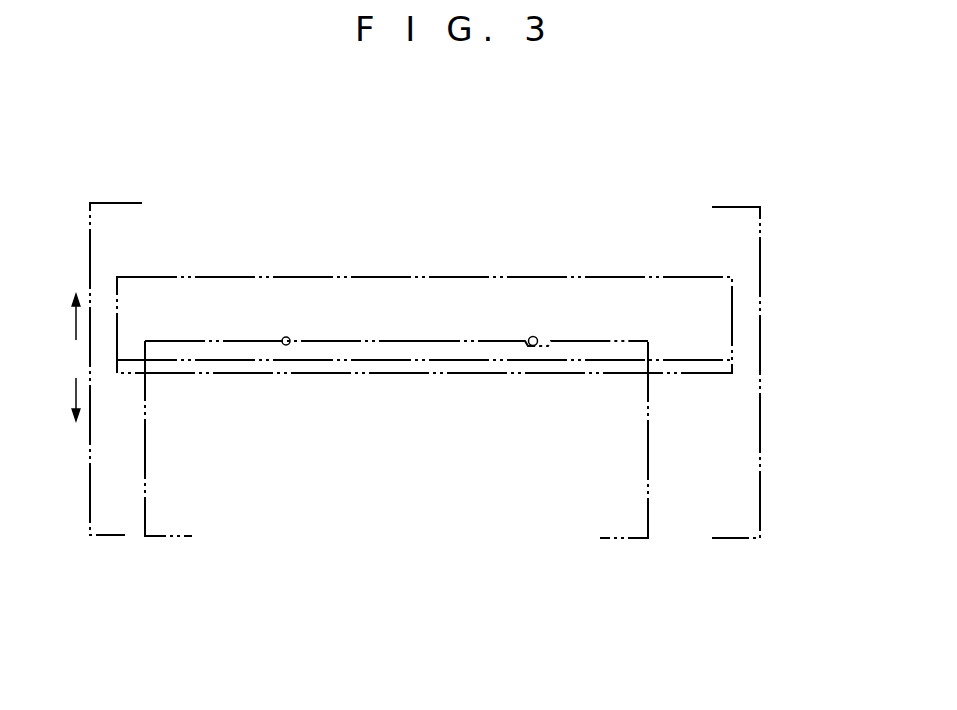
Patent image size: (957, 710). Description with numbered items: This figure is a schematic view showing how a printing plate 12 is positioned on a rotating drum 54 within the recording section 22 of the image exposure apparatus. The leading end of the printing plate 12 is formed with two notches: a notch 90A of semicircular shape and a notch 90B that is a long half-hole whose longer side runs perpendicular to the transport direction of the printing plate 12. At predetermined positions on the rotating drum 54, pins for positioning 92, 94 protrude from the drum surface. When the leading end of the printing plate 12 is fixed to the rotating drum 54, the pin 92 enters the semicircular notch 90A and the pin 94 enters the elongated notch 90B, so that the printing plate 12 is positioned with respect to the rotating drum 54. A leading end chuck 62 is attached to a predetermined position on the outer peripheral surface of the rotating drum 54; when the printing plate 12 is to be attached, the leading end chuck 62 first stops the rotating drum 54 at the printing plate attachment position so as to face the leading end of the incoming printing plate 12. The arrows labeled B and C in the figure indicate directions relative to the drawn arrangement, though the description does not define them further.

The recording section 22 is at (743, 188).
The leading end chuck 62 is at (716, 306).
The rotating drum 54 is at (745, 345).
The printing plate 12 is at (635, 493).
The notch 90A is at (289, 345).
The notch 90B is at (553, 338).
The pin for positioning 92 is at (290, 337).
The pin for positioning 94 is at (529, 337).
The direction B is at (75, 323).
The direction C is at (74, 400).